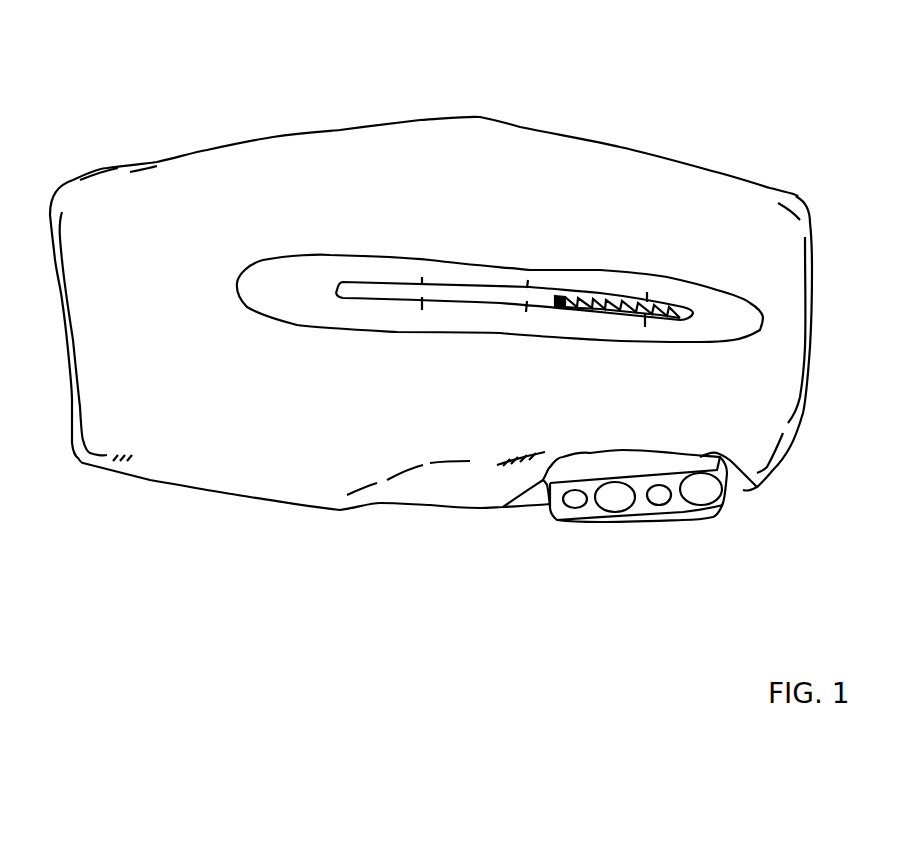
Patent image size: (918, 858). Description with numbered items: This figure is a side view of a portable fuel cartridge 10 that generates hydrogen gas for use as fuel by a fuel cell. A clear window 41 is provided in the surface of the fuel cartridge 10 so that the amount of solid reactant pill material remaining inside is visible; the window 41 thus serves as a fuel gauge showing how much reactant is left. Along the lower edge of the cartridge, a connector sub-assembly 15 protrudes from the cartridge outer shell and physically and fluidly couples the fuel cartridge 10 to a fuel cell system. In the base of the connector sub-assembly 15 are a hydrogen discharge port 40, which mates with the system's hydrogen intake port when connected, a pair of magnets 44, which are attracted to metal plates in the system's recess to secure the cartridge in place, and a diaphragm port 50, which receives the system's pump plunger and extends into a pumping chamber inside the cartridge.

The portable fuel cartridge 10 is at (180, 510).
The connector sub-assembly 15 is at (727, 493).
The hydrogen discharge port 40 is at (570, 500).
The clear window 41 is at (483, 297).
The magnets 44 is at (610, 503).
The diaphragm port 50 is at (655, 503).